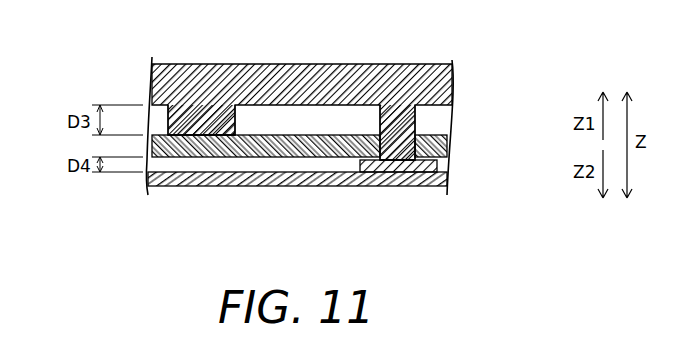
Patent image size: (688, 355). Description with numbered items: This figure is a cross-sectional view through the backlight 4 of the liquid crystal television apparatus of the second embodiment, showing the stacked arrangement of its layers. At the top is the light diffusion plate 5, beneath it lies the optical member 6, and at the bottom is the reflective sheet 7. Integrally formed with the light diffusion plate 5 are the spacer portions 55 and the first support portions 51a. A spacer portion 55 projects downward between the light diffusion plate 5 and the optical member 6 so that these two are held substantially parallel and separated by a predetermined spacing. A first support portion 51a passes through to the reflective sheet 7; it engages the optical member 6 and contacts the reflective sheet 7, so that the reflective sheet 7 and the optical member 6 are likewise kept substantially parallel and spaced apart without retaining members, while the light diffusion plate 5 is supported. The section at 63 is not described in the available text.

The backlight 4 is at (347, 133).
The light diffusion plate 5 is at (338, 89).
The optical member 6 is at (450, 142).
The reflective sheet 7 is at (447, 182).
The spacer portion 55 is at (237, 118).
The via 63 is at (388, 122).
The first support portion 51a is at (355, 164).